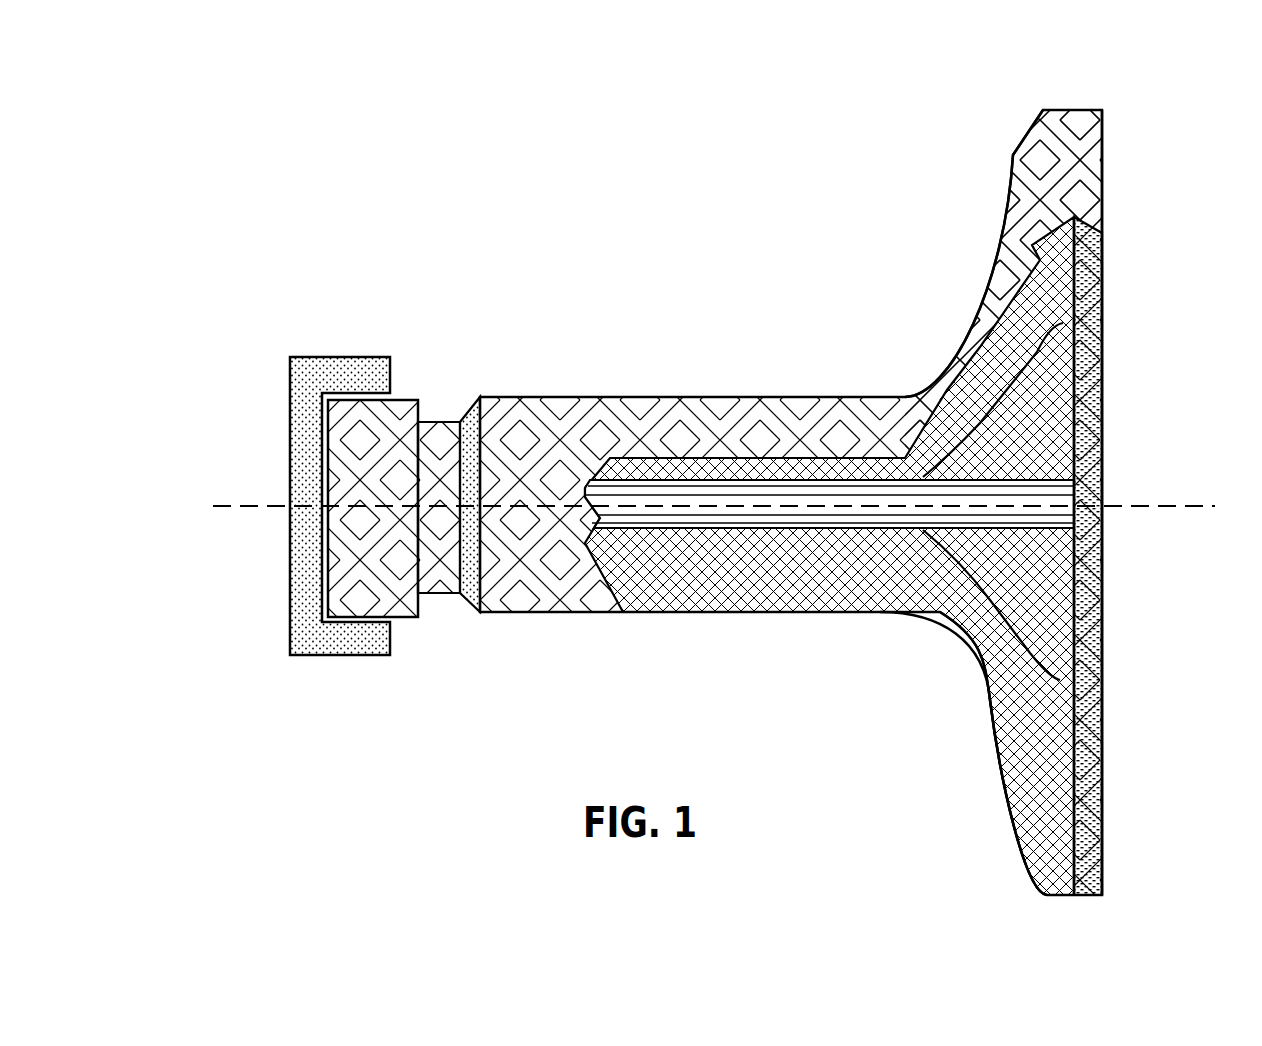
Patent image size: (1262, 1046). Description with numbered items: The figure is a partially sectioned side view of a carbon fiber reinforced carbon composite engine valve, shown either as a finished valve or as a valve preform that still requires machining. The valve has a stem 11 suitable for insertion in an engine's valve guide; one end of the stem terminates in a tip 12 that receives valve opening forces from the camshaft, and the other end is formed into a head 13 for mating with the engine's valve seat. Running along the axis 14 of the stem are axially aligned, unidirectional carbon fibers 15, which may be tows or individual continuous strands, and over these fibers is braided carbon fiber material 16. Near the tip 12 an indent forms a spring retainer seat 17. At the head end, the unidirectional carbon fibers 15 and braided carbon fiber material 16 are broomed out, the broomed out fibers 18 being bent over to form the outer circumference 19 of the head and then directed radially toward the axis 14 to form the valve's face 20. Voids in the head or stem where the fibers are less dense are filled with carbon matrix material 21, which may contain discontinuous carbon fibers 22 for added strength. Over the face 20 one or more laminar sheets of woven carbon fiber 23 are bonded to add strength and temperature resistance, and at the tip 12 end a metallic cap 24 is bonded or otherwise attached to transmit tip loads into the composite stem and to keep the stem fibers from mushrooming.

The stem 11 is at (723, 396).
The tip 12 is at (322, 400).
The head 13 is at (1003, 260).
The axis 14 is at (263, 503).
The unidirectional carbon fibers 15 is at (745, 517).
The braided carbon fiber material 16 is at (797, 421).
The spring retainer seat 17 is at (435, 595).
The broomed out fibers 18 is at (1073, 282).
The outer circumference 19 is at (1062, 112).
The face 20 is at (1103, 402).
The carbon matrix material 21 is at (890, 580).
The discontinuous carbon fibers 22 is at (963, 643).
The laminar sheets of woven carbon fiber 23 is at (1090, 895).
The metallic cap 24 is at (370, 657).